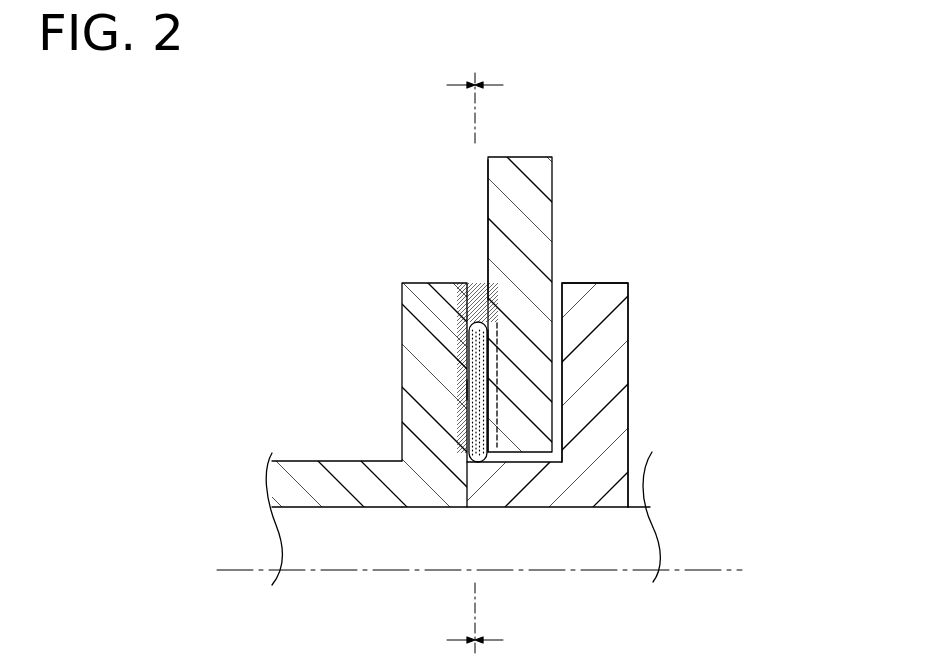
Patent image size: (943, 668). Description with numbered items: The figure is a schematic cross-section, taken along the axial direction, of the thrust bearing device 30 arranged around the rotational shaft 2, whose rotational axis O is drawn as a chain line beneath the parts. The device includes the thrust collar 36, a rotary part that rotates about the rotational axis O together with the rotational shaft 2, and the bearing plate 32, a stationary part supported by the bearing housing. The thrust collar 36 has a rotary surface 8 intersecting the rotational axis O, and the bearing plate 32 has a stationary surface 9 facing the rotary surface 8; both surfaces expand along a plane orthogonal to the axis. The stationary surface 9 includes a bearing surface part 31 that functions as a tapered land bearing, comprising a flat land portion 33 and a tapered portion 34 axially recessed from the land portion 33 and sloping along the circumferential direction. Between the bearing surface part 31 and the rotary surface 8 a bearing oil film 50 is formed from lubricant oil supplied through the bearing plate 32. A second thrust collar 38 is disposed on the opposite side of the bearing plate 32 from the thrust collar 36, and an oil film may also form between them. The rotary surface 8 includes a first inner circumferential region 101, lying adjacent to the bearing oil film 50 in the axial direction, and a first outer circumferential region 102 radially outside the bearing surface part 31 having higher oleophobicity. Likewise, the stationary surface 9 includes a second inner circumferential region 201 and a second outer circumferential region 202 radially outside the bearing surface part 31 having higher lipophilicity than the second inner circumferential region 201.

The rotational shaft 2 is at (632, 533).
The rotary surface 8 is at (472, 341).
The stationary surface 9 is at (488, 242).
The thrust bearing device 30 is at (620, 108).
The bearing surface part 31 is at (652, 437).
The bearing plate 32 is at (529, 167).
The land portion 33 is at (490, 363).
The tapered portion 34 is at (497, 378).
The thrust collar 36 is at (415, 293).
The thrust collar 38 is at (612, 293).
The bearing oil film 50 is at (483, 322).
The first inner circumferential region 101 is at (470, 388).
The first outer circumferential region 102 is at (472, 306).
The second inner circumferential region 201 is at (718, 388).
The second outer circumferential region 202 is at (488, 292).
The rotational axis O is at (723, 568).